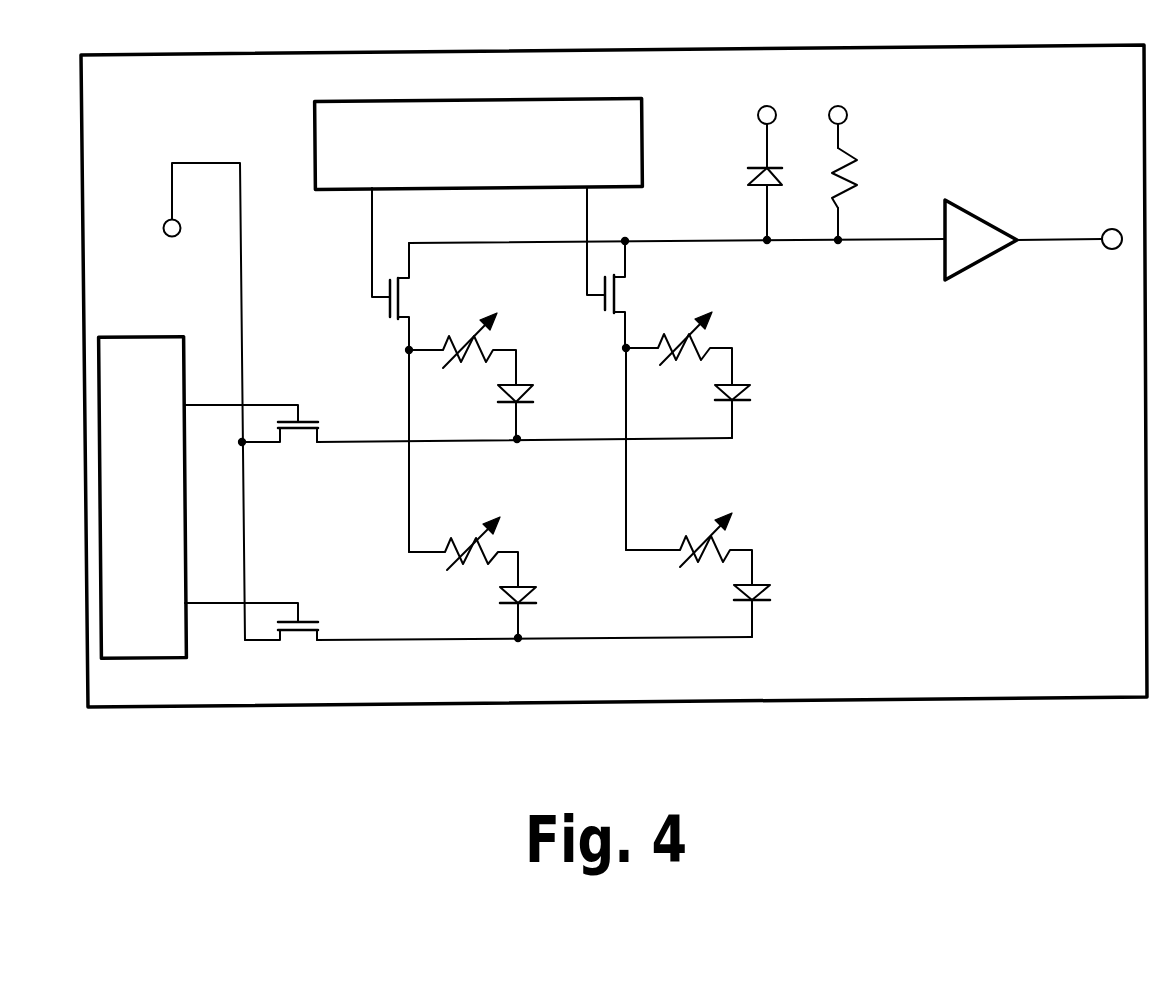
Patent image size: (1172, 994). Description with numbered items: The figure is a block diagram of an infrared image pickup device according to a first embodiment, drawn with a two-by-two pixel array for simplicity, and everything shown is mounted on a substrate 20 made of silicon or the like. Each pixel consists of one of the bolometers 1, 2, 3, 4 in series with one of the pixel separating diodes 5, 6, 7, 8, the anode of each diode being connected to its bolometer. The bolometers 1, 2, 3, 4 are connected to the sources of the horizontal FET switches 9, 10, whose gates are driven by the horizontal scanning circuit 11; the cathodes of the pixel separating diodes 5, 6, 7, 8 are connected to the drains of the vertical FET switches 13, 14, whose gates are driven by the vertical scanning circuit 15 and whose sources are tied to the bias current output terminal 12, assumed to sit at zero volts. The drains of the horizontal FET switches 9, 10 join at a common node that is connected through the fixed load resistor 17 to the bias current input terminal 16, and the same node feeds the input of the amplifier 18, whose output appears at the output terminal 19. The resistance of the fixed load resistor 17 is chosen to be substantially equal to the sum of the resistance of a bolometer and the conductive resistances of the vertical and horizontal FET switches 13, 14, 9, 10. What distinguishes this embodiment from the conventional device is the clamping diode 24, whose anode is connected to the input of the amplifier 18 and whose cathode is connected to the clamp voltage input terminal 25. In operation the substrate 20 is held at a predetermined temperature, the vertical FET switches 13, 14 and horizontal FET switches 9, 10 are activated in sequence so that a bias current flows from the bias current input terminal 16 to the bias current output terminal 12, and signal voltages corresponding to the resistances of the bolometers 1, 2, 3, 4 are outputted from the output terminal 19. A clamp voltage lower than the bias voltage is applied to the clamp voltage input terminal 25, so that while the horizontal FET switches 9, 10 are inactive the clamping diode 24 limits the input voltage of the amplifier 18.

The bolometer 1 is at (465, 327).
The bolometer 2 is at (683, 327).
The bolometer 3 is at (466, 528).
The bolometer 4 is at (703, 528).
The pixel separating diode 5 is at (535, 393).
The pixel separating diode 6 is at (752, 393).
The pixel separating diode 7 is at (538, 596).
The pixel separating diode 8 is at (772, 594).
The horizontal FET switch 9 is at (357, 277).
The horizontal FET switch 10 is at (580, 277).
The horizontal scanning circuit 11 is at (645, 187).
The bias current output terminal 12 is at (181, 232).
The vertical FET switch 13 is at (284, 388).
The vertical FET switch 14 is at (295, 600).
The vertical scanning circuit 15 is at (190, 655).
The bias current input terminal 16 is at (848, 111).
The fixed load resistor 17 is at (858, 180).
The amplifier 18 is at (975, 218).
The output terminal 19 is at (1112, 229).
The substrate 20 is at (1005, 699).
The clamping diode 24 is at (748, 176).
The clamp voltage input terminal 25 is at (758, 110).